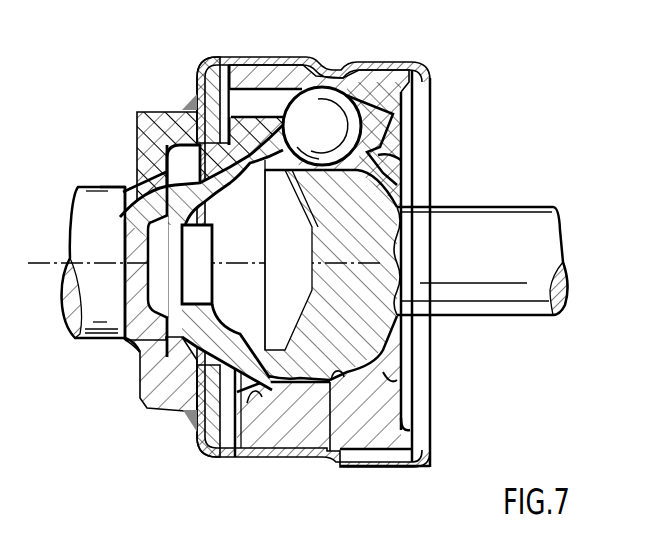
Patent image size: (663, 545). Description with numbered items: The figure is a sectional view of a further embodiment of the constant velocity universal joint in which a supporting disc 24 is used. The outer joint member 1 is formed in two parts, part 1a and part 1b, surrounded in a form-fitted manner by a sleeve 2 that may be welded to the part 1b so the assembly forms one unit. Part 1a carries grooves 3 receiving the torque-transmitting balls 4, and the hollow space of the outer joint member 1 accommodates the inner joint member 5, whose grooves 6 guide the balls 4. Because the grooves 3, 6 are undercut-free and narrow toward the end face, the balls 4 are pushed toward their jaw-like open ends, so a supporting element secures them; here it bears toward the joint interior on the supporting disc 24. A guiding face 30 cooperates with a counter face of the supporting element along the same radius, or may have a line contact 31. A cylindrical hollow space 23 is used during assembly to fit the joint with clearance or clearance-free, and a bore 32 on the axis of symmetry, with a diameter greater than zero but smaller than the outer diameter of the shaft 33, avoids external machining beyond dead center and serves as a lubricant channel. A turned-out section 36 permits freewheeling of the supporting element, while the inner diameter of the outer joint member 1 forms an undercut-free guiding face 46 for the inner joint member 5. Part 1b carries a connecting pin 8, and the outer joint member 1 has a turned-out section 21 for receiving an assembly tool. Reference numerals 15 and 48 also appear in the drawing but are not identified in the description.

The outer joint member 1 is at (269, 241).
The part of outer joint member 1a is at (312, 78).
The part of outer joint member 1b is at (158, 393).
The sleeve 2 is at (403, 463).
The grooves 3 is at (377, 80).
The torque-transmitting balls 4 is at (374, 110).
The inner joint member 5 is at (357, 335).
The grooves 6 is at (380, 158).
The connecting pin 8 is at (110, 347).
The axis 15 is at (43, 272).
The turned-out section 21 is at (410, 427).
The cylindrical hollow space 23 is at (233, 67).
The supporting disc 24 is at (213, 57).
The guiding face 30 is at (138, 113).
The line contact 31 is at (205, 158).
The bore 32 is at (100, 182).
The shaft 33 is at (470, 237).
The turned-out section 36 is at (247, 403).
The guiding face 46 is at (333, 382).
The recess 48 is at (383, 378).